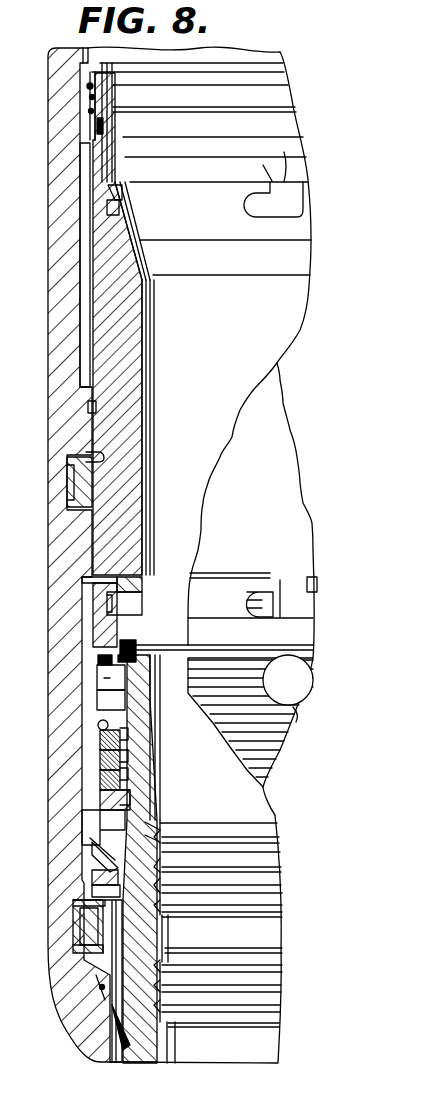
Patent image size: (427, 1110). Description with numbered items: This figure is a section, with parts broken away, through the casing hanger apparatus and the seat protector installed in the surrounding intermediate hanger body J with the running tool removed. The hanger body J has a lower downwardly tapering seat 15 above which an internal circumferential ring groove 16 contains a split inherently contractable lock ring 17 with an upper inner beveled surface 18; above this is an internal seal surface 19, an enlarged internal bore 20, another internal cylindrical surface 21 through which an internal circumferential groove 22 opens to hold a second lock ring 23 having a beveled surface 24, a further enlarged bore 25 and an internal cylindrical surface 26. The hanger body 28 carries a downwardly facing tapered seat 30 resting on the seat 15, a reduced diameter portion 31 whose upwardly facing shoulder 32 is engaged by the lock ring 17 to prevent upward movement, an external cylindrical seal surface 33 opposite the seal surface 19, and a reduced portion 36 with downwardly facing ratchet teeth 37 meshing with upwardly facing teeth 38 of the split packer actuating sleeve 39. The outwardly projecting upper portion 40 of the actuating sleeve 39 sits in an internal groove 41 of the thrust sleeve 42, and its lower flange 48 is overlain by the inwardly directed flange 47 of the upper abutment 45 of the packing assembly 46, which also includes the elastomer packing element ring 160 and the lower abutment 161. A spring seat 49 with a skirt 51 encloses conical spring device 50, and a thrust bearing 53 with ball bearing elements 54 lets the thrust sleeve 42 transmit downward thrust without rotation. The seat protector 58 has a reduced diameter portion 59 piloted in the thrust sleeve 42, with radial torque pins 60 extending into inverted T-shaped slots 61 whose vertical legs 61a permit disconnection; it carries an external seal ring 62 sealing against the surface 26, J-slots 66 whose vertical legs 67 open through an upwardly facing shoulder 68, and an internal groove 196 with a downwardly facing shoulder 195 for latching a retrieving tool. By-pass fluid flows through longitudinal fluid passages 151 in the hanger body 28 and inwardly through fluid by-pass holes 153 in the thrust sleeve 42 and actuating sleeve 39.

The intermediate hanger body J is at (52, 245).
The external seal ring 62 is at (88, 87).
The downwardly facing shoulder 195 is at (92, 99).
The internal cylindrical surface 26 is at (92, 112).
The internal groove 196 is at (100, 130).
The vertical legs 67 is at (284, 160).
The upwardly facing shoulder 68 is at (115, 186).
The J-slots 66 is at (108, 210).
The enlarged bore 25 is at (82, 285).
The seat protector 58 is at (96, 330).
The internal cylindrical surface 21 is at (90, 405).
The upper inner beveled surface 24 is at (92, 456).
The internal circumferential groove 22 is at (70, 476).
The split inherently contractable lock ring 23 is at (80, 500).
The enlarged internal bore 20 is at (82, 586).
The inverted T-shaped slots 61 is at (108, 602).
The vertical legs 61a is at (281, 590).
The thrust sleeve 42 is at (112, 628).
The reduced diameter portion 59 is at (130, 586).
The radial torque pins 60 is at (142, 603).
The outwardly projecting upper portion 40 is at (137, 642).
The fluid by-pass holes 153 is at (100, 658).
The internal circumferential groove 41 is at (104, 681).
The upwardly facing ratchet teeth 38 is at (125, 697).
The reduced external diameter portion 36 is at (143, 700).
The thrust bearing 53 is at (80, 722).
The spring seat 49 is at (102, 735).
The spring device 50 is at (104, 750).
The skirt 51 is at (102, 770).
The ball bearing elements 54 is at (130, 728).
The packer actuating sleeve 39 is at (130, 755).
The downwardly facing ratchet teeth 37 is at (127, 773).
The inwardly directed flange 47 is at (127, 800).
The outwardly extending lower flange 48 is at (100, 797).
The upper abutment 45 is at (100, 818).
The external cylindrical seal surface 33 is at (142, 858).
The internal seal surface 19 is at (93, 838).
The packing assembly 46 is at (90, 851).
The packing element ring 160 is at (95, 869).
The lower abutment 161 is at (110, 882).
The upper inner beveled surface 18 is at (87, 905).
The internal circumferential ring groove 16 is at (75, 915).
The reduced external diameter portion 31 is at (92, 935).
The split inherently contractable lock ring 17 is at (90, 946).
The upwardly facing shoulder 32 is at (119, 960).
The longitudinal fluid passages 151 is at (96, 975).
The tapered seat 15 is at (100, 988).
The downwardly facing tapered seat 30 is at (110, 1030).
The hanger body 28 is at (96, 1062).